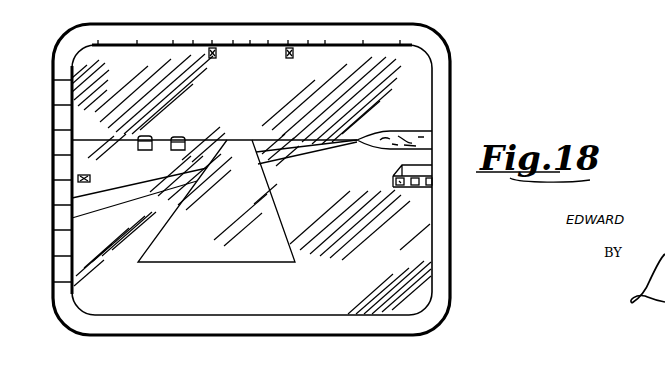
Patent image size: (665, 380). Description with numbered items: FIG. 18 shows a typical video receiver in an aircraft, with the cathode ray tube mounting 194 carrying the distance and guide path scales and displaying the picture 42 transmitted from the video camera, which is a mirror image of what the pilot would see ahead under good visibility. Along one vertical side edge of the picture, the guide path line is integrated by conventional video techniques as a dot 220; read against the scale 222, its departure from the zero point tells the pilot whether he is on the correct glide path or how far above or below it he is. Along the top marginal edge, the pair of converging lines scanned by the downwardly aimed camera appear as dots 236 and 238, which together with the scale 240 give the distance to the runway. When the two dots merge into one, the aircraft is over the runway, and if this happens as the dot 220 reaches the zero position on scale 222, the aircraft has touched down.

The viewing screen frame 194 is at (441, 0).
The picture 42 is at (405, 110).
The scale 240 is at (333, 28).
The scale 222 is at (44, 78).
The dot 236 is at (213, 58).
The dot 238 is at (289, 58).
The dot 220 is at (90, 178).